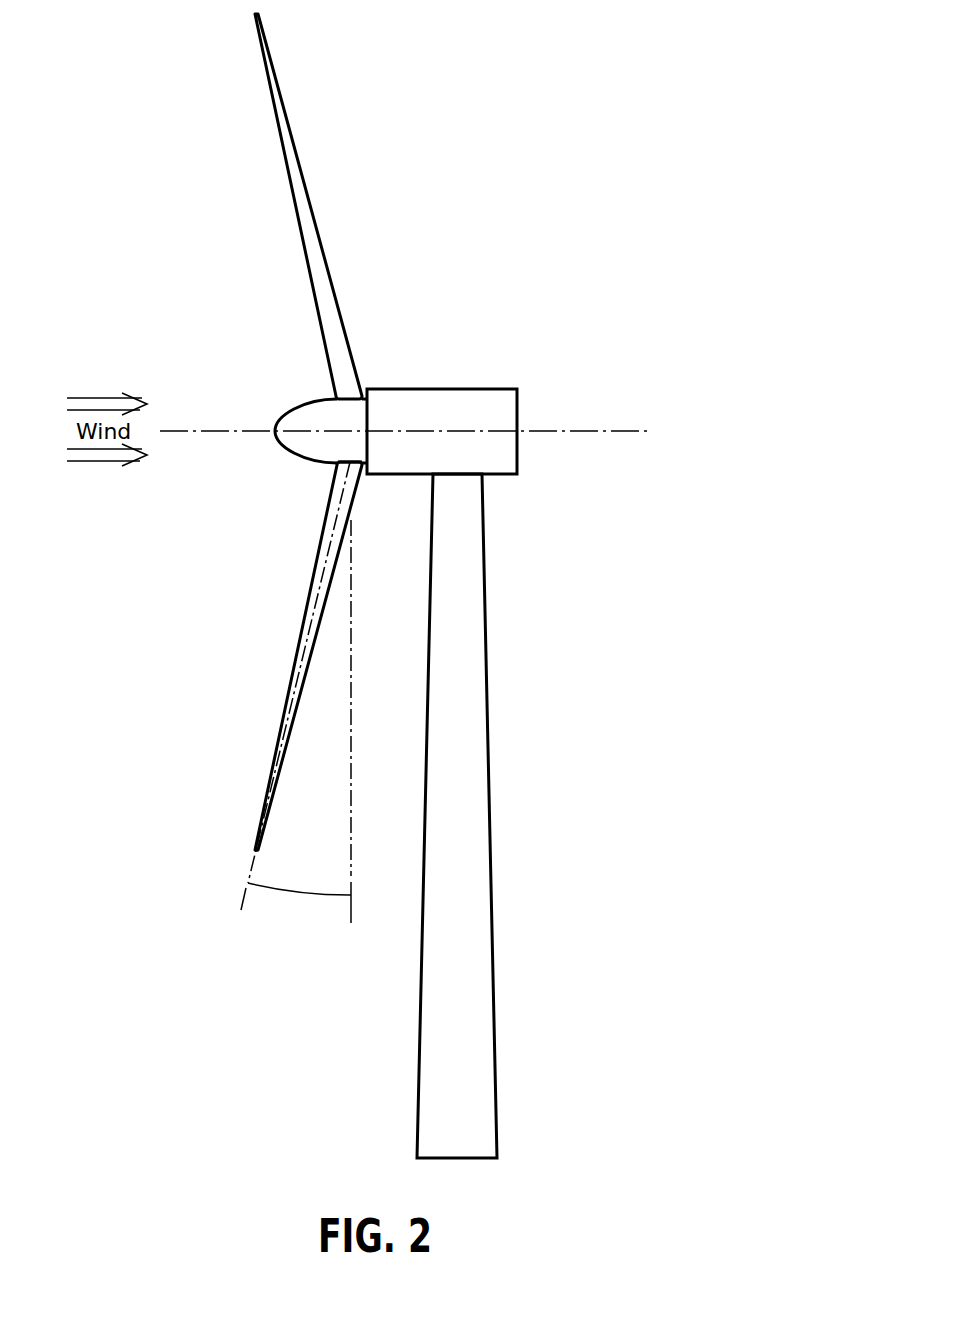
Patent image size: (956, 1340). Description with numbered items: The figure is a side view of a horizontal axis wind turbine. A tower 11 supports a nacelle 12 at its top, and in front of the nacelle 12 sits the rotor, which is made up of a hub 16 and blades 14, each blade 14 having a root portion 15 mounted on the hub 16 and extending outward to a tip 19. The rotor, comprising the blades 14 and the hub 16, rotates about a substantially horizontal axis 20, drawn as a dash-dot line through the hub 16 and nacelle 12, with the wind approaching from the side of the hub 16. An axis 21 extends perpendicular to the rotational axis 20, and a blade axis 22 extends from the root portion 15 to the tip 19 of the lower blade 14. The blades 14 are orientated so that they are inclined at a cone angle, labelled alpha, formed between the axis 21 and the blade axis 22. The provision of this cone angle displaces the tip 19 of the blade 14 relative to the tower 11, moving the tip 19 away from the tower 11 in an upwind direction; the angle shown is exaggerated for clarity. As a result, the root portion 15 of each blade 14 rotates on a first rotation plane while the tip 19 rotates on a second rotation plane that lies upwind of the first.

The tower 11 is at (481, 793).
The nacelle 12 is at (485, 397).
The blade 14 is at (318, 318).
The root portion 15 is at (345, 476).
The hub 16 is at (295, 449).
The tip 19 is at (255, 849).
The horizontal axis 20 is at (628, 433).
The axis 21 is at (354, 859).
The blade axis 22 is at (240, 895).